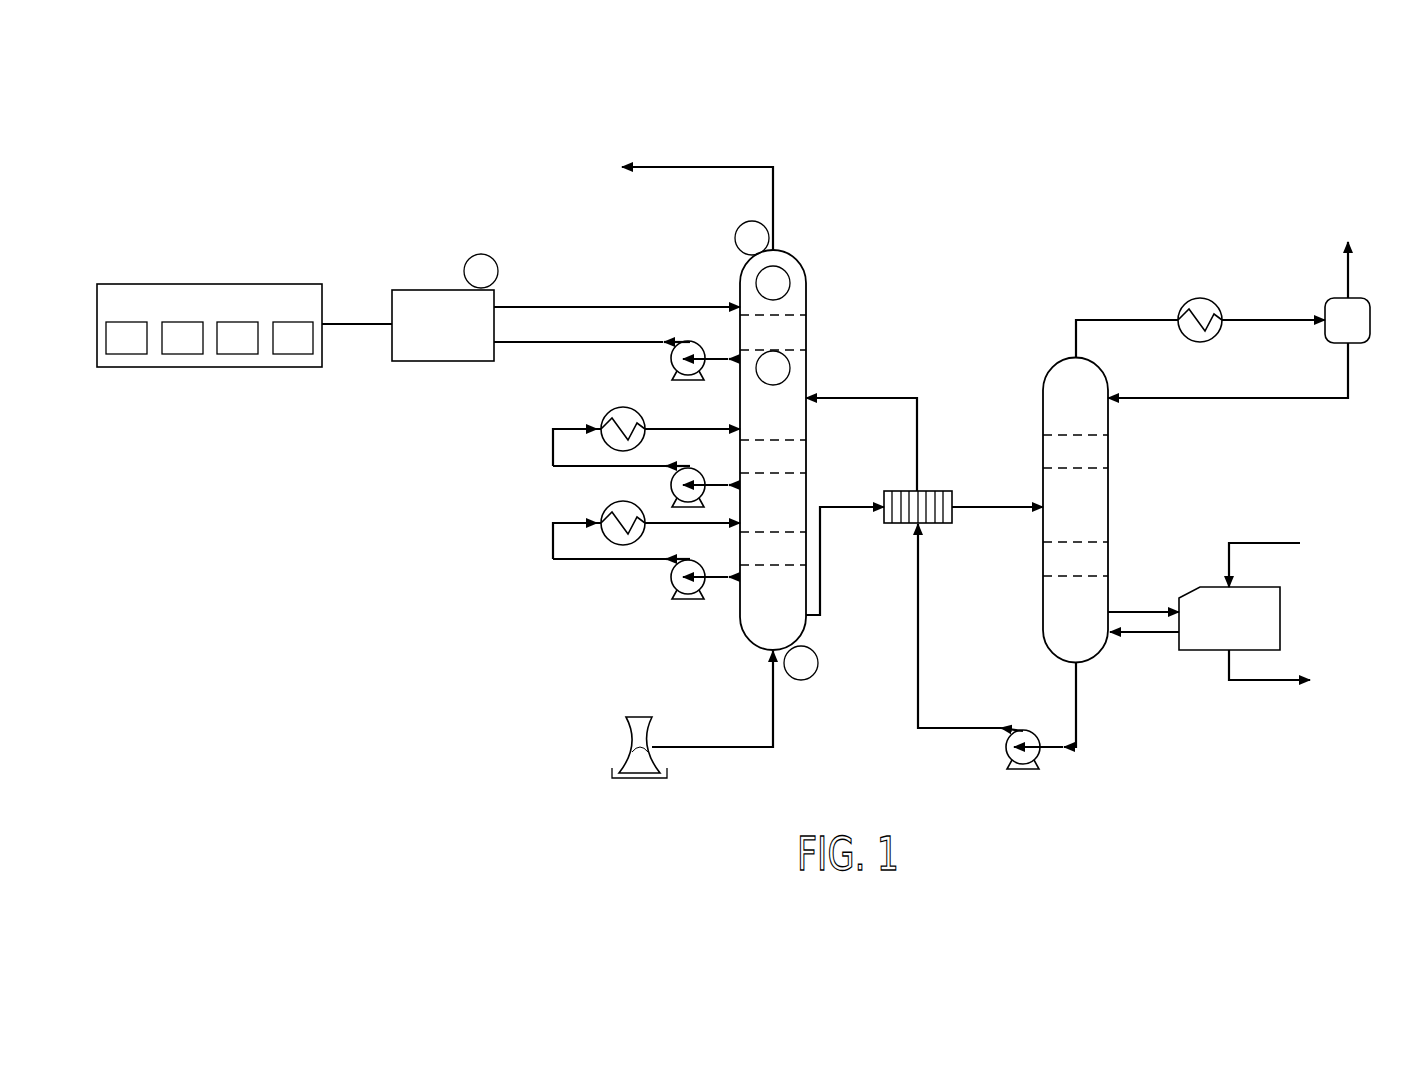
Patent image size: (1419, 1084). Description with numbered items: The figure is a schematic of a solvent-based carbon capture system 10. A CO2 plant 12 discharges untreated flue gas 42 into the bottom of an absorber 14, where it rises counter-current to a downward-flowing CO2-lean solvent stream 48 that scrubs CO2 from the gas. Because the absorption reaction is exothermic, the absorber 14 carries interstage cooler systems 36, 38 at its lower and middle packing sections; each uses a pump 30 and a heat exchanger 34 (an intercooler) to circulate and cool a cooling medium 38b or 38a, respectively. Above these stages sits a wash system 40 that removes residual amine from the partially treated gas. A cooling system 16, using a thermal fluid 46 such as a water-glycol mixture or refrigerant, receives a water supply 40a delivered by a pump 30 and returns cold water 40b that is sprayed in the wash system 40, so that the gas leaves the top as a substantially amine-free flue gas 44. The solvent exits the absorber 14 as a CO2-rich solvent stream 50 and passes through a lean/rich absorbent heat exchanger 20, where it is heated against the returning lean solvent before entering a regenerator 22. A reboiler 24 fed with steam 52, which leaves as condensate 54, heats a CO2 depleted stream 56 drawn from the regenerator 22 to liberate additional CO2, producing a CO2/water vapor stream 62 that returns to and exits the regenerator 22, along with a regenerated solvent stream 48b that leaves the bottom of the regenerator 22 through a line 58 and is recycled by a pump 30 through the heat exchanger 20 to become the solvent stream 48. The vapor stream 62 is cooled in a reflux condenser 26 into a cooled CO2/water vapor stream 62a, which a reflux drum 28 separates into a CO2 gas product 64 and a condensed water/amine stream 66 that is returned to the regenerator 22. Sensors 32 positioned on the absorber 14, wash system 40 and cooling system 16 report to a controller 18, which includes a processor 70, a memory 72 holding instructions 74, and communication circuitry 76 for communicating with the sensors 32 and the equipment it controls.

The carbon capture system 10 is at (250, 198).
The CO2 plant 12 is at (640, 716).
The absorber 14 is at (748, 644).
The cooling system 16 is at (425, 290).
The controller 18 is at (210, 284).
The lean/rich absorbent heat exchanger 20 is at (890, 527).
The regenerator 22 is at (1042, 584).
The reboiler 24 is at (1280, 620).
The reflux condenser 26 is at (1205, 298).
The reflux drum 28 is at (1372, 320).
The pump 30 is at (672, 358).
The sensor 32 is at (757, 283).
The heat exchanger 34 is at (640, 415).
The interstage cooler system 36 is at (772, 547).
The interstage cooler system 38 is at (793, 457).
The cooling medium 38a is at (553, 445).
The cooling medium 38b is at (553, 540).
The wash system 40 is at (806, 331).
The water supply 40a is at (570, 345).
The cold water 40b is at (530, 306).
The untreated flue gas 42 is at (715, 748).
The flue gas 44 is at (665, 167).
The thermal fluid 46 is at (395, 355).
The solvent stream 48 is at (917, 412).
The regenerated solvent stream 48b is at (940, 730).
The CO2-rich solvent stream 50 is at (846, 500).
The steam 52 is at (1268, 543).
The condensate 54 is at (1270, 681).
The CO2 depleted stream 56 is at (1140, 610).
The bottoms stream 58 is at (1075, 700).
The CO2/water vapor stream 62 is at (1108, 320).
The cooled CO2/water vapor stream 62a is at (1268, 320).
The CO2 gas product 64 is at (1350, 270).
The condensed water/amine stream 66 is at (1235, 400).
The processor 70 is at (130, 354).
The memory 72 is at (187, 354).
The instructions 74 is at (241, 354).
The communication circuitry 76 is at (297, 354).